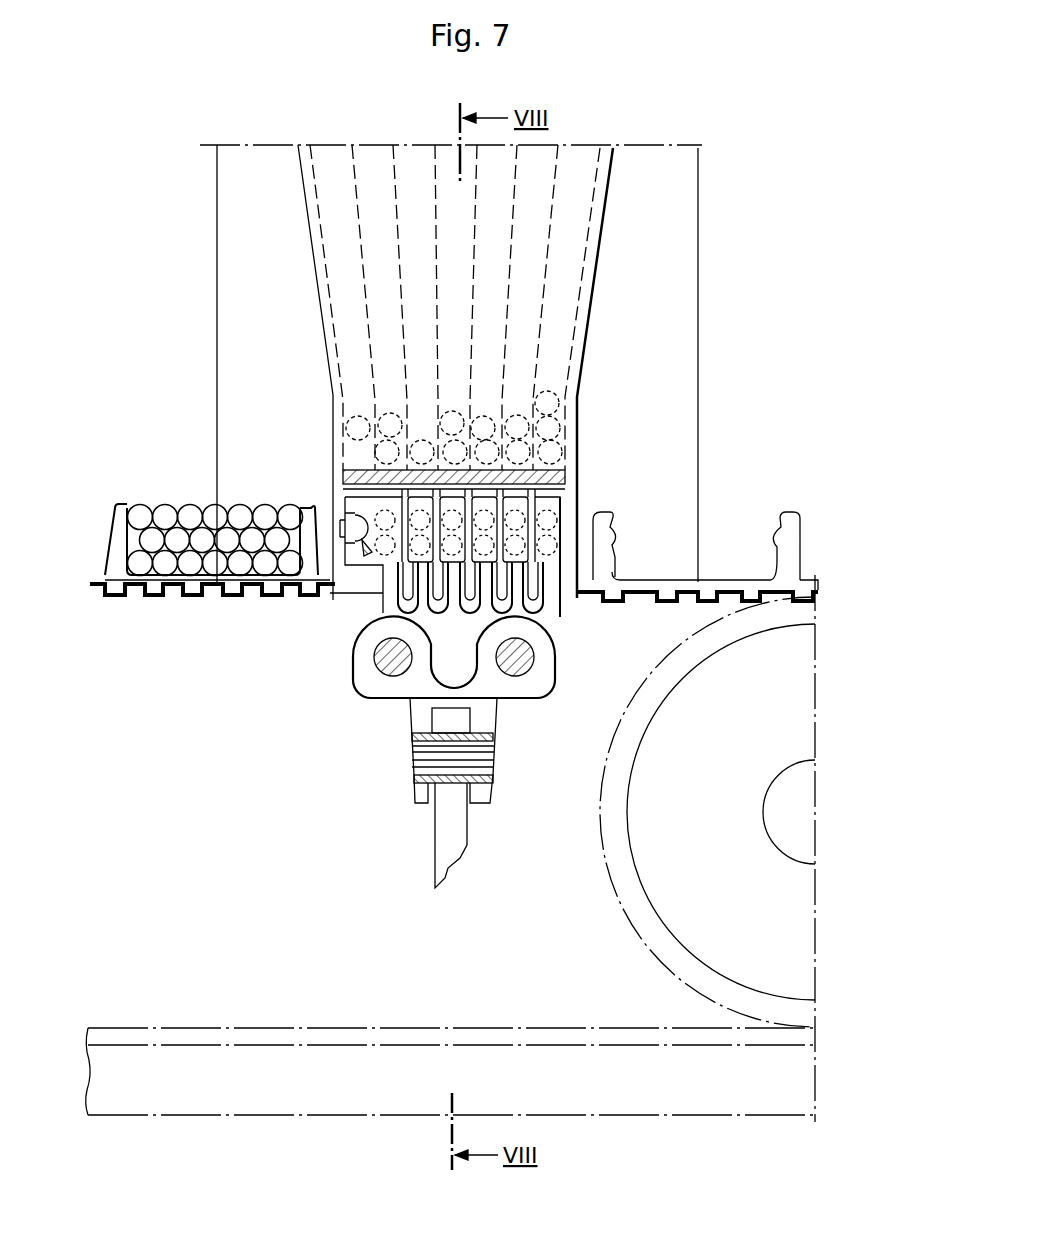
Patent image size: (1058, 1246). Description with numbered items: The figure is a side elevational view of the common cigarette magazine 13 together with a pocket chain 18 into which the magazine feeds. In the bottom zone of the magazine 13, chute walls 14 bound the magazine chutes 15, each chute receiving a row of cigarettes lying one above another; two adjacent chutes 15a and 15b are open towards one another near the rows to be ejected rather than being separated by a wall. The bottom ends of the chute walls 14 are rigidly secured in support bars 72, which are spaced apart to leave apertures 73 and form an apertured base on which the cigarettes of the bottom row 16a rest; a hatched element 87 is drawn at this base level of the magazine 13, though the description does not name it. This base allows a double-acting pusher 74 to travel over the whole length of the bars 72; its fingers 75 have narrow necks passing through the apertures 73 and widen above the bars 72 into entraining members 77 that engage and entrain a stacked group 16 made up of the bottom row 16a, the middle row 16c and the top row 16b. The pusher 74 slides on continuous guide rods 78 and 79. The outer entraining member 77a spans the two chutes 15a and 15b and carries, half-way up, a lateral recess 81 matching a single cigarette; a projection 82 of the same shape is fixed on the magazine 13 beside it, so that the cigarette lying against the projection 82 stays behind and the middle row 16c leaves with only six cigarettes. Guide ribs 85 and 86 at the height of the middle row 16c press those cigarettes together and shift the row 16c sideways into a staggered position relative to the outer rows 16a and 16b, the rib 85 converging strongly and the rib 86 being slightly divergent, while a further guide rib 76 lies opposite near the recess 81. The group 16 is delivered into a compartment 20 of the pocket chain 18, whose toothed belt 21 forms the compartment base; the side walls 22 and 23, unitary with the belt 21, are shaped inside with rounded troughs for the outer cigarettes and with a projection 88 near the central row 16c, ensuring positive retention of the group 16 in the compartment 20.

The cigarette magazine 13 is at (708, 238).
The chute walls 14 is at (513, 188).
The magazine chutes 15 is at (468, 307).
The magazine chute 15a is at (423, 406).
The magazine chute 15b is at (329, 316).
The cigarette group 16 is at (188, 497).
The bottom row 16a is at (595, 530).
The top row 16b is at (352, 522).
The middle row 16c is at (453, 659).
The pocket chain 18 is at (718, 570).
The compartments 20 is at (174, 574).
The toothed belt 21 is at (137, 592).
The side wall 22 is at (114, 540).
The side wall 23 is at (306, 586).
The support bars 72 is at (570, 572).
The apertures 73 is at (557, 606).
The pusher 74 is at (522, 707).
The fingers 75 is at (563, 632).
The guide rib 76 is at (580, 592).
The entraining members 77 is at (560, 492).
The outer entraining member 77a is at (380, 478).
The guide rod 78 is at (524, 668).
The guide rod 79 is at (393, 675).
The lateral recess 81 is at (373, 556).
The projection 82 is at (366, 548).
The guide rib 85 is at (548, 524).
The guide rib 86 is at (342, 528).
The plate 87 is at (522, 495).
The projection 88 is at (645, 540).